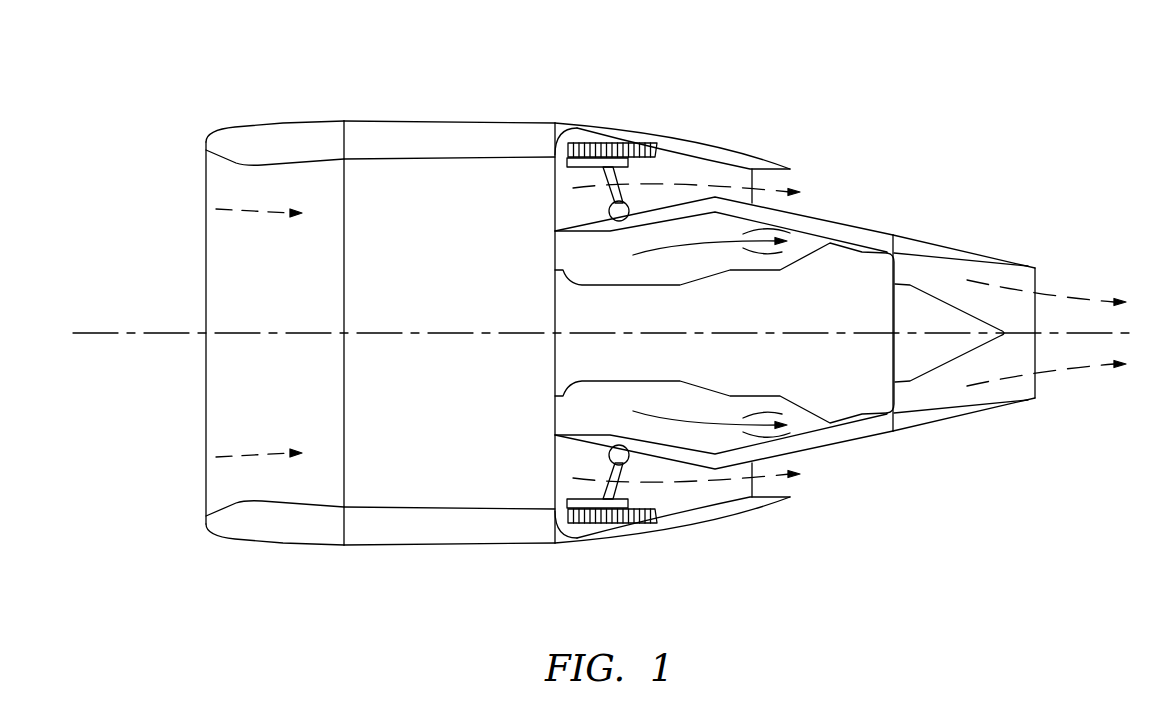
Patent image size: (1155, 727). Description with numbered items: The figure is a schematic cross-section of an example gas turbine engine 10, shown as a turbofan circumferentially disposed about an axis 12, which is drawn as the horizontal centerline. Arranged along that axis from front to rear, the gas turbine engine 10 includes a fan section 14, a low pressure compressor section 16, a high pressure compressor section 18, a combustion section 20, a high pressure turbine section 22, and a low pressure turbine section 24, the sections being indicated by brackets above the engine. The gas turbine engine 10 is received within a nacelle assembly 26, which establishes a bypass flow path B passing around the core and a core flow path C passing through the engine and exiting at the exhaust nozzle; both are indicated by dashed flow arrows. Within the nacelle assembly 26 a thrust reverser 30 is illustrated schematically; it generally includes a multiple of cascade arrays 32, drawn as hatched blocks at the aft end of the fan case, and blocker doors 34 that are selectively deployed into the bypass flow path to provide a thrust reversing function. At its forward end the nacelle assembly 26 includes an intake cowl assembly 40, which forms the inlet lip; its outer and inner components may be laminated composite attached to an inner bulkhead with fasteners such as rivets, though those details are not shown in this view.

The gas turbine engine 10 is at (982, 117).
The axis 12 is at (110, 332).
The fan section 14 is at (341, 107).
The low pressure compressor section 16 is at (565, 107).
The high pressure compressor section 18 is at (650, 107).
The combustion section 20 is at (780, 252).
The high pressure turbine section 22 is at (812, 204).
The low pressure turbine section 24 is at (850, 204).
The nacelle assembly 26 is at (315, 558).
The thrust reverser 30 is at (708, 540).
The cascade arrays 32 is at (626, 518).
The blocker doors 34 is at (575, 497).
The intake cowl assembly 40 is at (277, 120).
The bypass flow path B is at (768, 472).
The core flow path C is at (1073, 370).